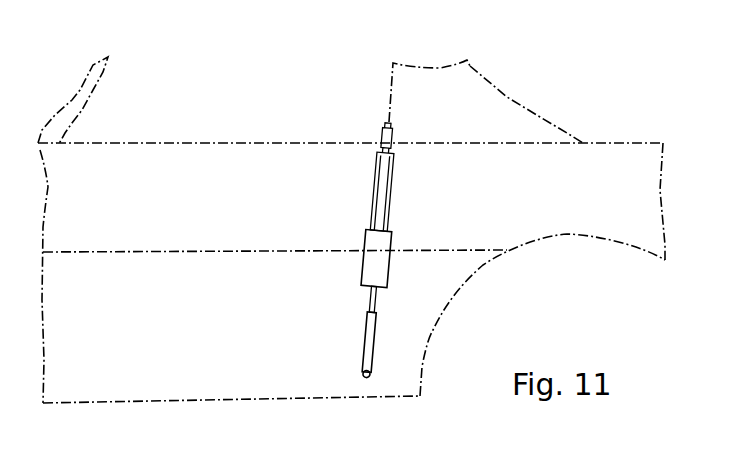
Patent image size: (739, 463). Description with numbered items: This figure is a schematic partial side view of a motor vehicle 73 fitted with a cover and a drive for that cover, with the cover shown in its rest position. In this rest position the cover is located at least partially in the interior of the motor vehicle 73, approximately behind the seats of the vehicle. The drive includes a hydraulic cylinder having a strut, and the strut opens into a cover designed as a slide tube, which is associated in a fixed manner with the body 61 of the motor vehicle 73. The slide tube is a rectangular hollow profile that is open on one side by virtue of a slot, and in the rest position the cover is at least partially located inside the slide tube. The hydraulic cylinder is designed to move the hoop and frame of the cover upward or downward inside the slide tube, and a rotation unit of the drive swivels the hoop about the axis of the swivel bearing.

The body 61 is at (604, 223).
The motor vehicle 73 is at (557, 108).